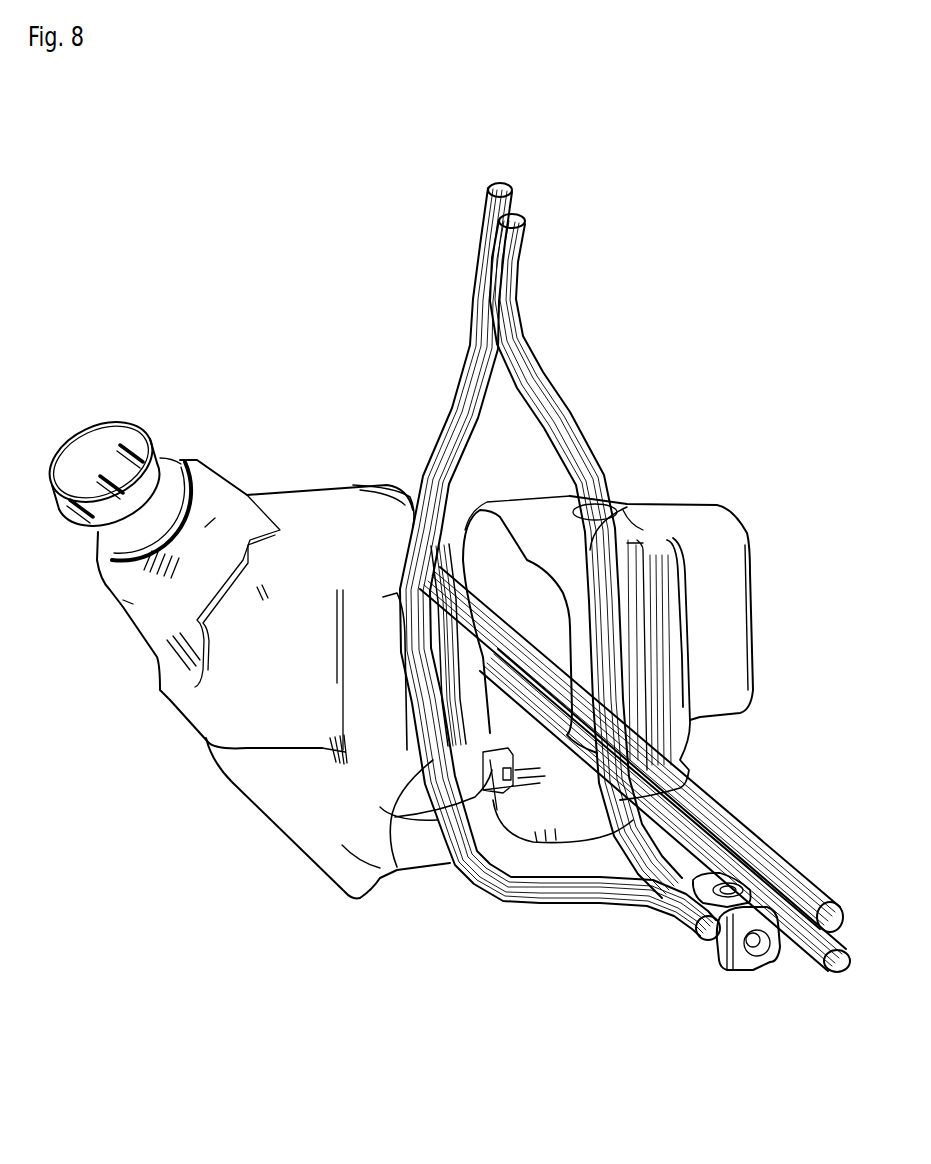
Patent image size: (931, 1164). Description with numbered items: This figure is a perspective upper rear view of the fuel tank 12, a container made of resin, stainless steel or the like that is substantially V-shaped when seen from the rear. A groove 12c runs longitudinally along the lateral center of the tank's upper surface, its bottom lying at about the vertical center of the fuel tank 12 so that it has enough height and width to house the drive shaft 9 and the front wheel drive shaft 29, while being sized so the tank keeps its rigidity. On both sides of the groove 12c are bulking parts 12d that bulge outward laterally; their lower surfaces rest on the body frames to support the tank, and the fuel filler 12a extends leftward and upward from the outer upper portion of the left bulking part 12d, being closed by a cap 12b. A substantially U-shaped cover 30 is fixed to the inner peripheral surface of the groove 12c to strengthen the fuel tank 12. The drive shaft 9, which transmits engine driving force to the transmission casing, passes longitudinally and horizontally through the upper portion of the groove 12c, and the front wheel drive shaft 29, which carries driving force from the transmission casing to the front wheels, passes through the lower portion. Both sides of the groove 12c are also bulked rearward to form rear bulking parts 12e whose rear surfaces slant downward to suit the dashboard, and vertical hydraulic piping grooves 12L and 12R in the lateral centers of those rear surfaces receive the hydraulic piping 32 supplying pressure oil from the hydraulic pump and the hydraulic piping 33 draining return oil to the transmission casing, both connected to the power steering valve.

The fuel tank 12 is at (257, 307).
The hydraulic piping groove 12L is at (370, 888).
The hydraulic piping groove 12R is at (643, 650).
The fuel filler 12a is at (167, 443).
The cap 12b is at (100, 420).
The groove 12c is at (390, 467).
The bulking parts 12d is at (280, 689).
The rear bulking parts 12e is at (430, 820).
The drive shaft 9 is at (730, 827).
The front wheel drive shaft 29 is at (647, 884).
The cover 30 is at (520, 581).
The hydraulic piping 32 is at (470, 350).
The hydraulic piping 33 is at (560, 397).